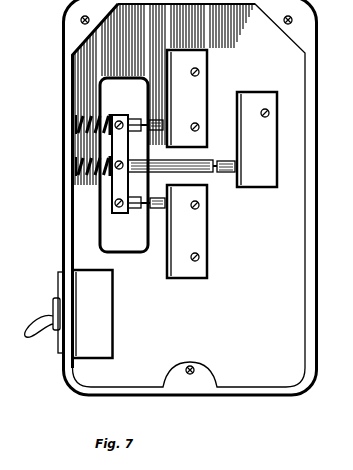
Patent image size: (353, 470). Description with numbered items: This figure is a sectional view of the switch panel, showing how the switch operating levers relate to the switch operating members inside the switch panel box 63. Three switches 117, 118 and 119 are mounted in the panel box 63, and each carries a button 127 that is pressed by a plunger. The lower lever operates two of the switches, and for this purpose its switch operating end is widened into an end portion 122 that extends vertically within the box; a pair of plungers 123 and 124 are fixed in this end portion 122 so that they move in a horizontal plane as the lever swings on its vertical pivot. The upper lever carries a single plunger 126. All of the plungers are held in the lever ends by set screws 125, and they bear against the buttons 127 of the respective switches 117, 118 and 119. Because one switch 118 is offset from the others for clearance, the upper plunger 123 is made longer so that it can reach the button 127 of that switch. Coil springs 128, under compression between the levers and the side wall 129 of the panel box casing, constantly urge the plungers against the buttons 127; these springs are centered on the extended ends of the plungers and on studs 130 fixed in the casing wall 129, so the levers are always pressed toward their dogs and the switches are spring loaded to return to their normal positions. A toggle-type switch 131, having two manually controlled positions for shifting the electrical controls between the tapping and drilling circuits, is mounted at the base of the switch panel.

The switch panel box 63 is at (316, 90).
The switch 117 is at (195, 62).
The switch 118 is at (263, 98).
The switch 119 is at (195, 238).
The end portion 122 is at (114, 198).
The plunger 123 is at (205, 172).
The plunger 124 is at (135, 212).
The set screws 125 is at (117, 183).
The plunger 126 is at (134, 120).
The buttons 127 is at (228, 160).
The coil springs 128 is at (100, 158).
The side wall 129 is at (75, 172).
The studs 130 is at (76, 122).
The switch 131 is at (95, 322).